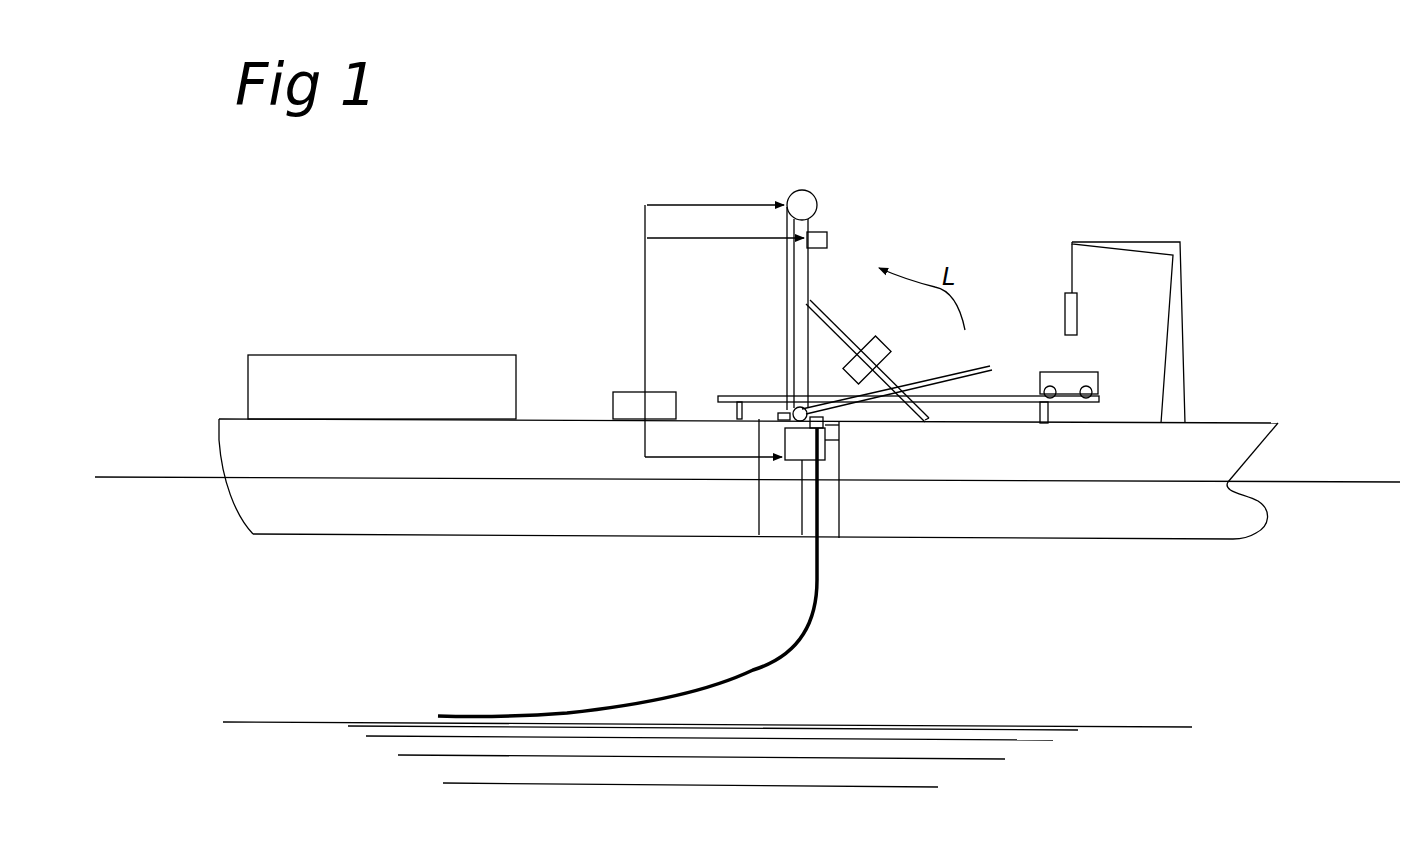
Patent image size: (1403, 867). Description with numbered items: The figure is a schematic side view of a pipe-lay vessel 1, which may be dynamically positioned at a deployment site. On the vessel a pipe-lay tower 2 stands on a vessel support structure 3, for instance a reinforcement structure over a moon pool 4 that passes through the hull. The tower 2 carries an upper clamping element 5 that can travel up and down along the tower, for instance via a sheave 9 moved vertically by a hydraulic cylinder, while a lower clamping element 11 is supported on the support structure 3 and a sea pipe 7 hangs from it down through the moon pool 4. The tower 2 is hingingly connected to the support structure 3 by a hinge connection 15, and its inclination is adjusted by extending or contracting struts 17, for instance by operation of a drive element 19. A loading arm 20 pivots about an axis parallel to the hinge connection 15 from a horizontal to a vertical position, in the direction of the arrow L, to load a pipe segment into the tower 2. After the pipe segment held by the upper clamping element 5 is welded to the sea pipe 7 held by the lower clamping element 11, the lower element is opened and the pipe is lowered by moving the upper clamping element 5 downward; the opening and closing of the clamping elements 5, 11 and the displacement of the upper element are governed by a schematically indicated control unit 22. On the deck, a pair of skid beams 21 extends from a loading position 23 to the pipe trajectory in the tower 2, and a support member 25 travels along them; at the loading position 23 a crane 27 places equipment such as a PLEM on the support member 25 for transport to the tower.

The pipe-lay vessel 1 is at (1235, 523).
The pipe-lay tower 2 is at (770, 295).
The vessel support structure 3 is at (833, 432).
The moon pool 4 is at (772, 522).
The upper clamping element 5 is at (827, 239).
The sea pipe 7 is at (753, 671).
The sheave 9 is at (802, 205).
The lower clamping element 11 is at (815, 428).
The hinge connection 15 is at (794, 410).
The struts 17 is at (925, 420).
The drive element 19 is at (866, 360).
The loading arm 20 is at (990, 368).
The skid beams 21 is at (1027, 404).
The control unit 22 is at (634, 405).
The loading position 23 is at (777, 384).
The support member 25 is at (1080, 382).
The crane 27 is at (1175, 285).